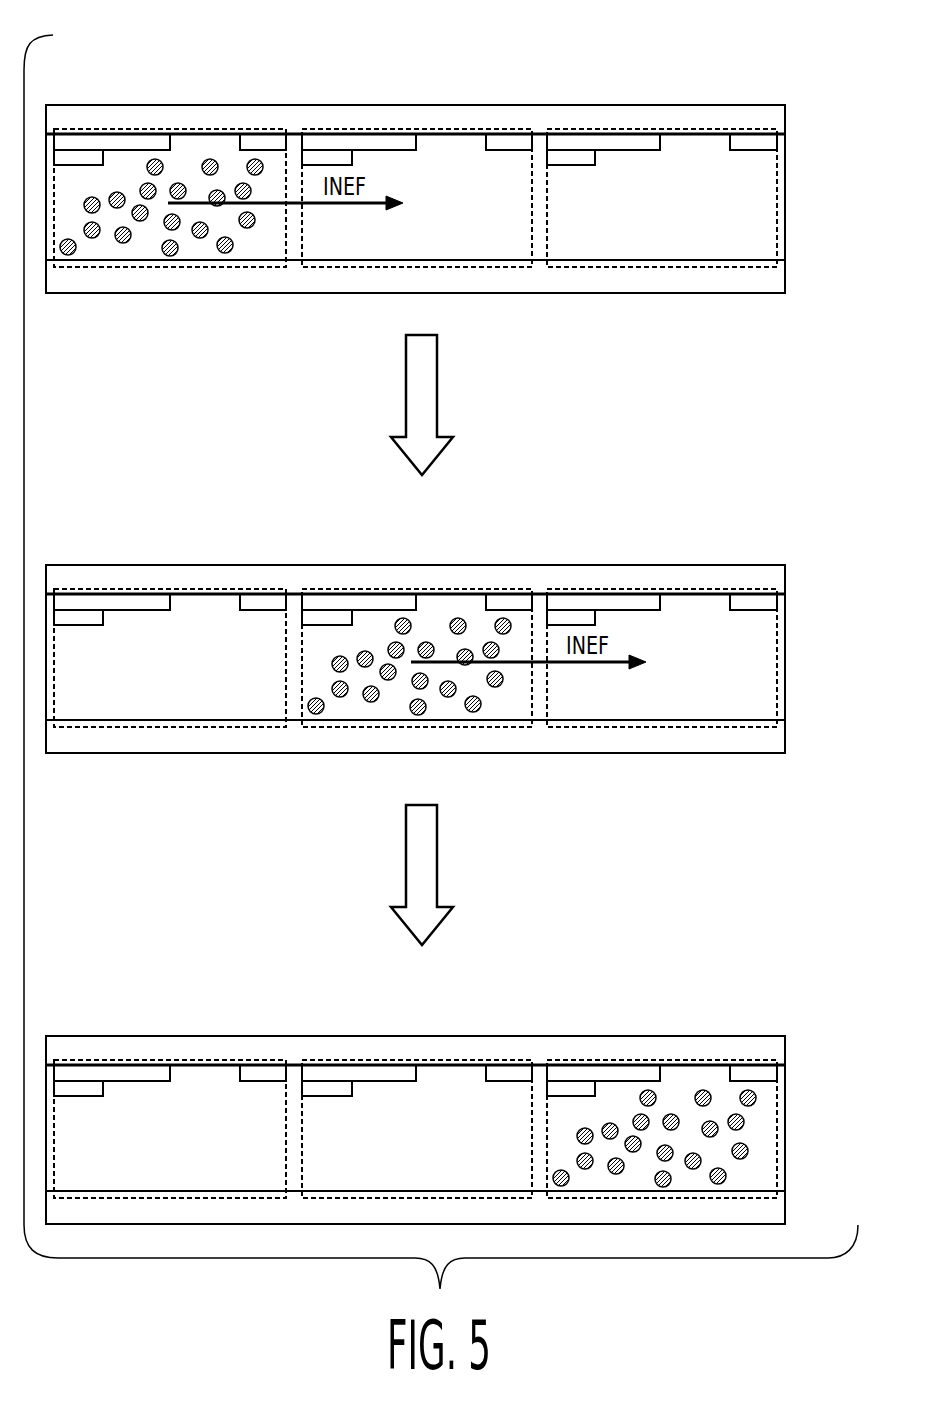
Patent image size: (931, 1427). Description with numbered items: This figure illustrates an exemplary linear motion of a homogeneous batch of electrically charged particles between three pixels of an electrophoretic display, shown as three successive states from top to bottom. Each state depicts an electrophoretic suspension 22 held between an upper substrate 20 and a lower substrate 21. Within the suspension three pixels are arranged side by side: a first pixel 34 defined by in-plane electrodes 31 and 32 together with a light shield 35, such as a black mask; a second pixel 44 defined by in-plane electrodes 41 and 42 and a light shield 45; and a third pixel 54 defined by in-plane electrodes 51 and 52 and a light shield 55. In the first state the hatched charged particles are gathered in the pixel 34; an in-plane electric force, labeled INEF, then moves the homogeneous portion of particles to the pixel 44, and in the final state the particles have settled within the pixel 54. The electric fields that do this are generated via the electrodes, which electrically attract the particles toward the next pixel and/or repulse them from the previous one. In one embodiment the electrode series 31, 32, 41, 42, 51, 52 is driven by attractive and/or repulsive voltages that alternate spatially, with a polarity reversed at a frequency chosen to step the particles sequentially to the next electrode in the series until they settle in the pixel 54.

The substrate 20 is at (778, 118).
The substrate 21 is at (778, 277).
The electrophoretic suspension 22 is at (780, 193).
The in-plane electrode 31 is at (82, 158).
The in-plane electrode 32 is at (258, 143).
The pixel 34 is at (158, 127).
The light shield 35 is at (120, 145).
The in-plane electrode 41 is at (323, 157).
The in-plane electrode 42 is at (513, 142).
The pixel 44 is at (423, 128).
The light shield 45 is at (362, 145).
The in-plane electrode 51 is at (562, 158).
The in-plane electrode 52 is at (750, 143).
The pixel 54 is at (658, 128).
The light shield 55 is at (615, 145).